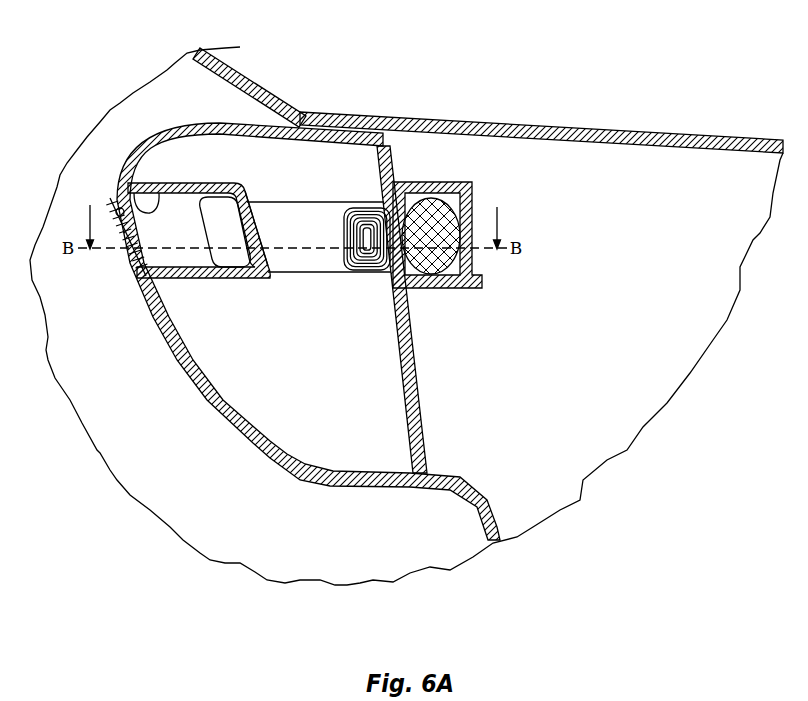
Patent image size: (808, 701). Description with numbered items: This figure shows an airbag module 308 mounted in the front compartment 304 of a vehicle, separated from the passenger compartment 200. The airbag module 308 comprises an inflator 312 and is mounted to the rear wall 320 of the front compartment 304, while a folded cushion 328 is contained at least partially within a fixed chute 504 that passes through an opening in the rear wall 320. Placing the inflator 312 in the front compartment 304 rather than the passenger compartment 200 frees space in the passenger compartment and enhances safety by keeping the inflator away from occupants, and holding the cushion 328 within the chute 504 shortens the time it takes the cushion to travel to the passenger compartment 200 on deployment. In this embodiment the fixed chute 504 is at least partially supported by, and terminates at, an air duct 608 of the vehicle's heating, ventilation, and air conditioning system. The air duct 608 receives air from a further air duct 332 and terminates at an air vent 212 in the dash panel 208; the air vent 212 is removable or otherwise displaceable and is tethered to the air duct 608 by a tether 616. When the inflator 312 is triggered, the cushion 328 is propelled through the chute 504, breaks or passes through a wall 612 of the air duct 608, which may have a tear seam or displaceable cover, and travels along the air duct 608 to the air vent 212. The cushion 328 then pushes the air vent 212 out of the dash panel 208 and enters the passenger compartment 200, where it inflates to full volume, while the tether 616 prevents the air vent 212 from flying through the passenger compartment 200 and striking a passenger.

The passenger compartment 200 is at (215, 526).
The dash panel 208 is at (212, 410).
The air vent 212 is at (125, 262).
The front compartment 304 is at (630, 167).
The airbag module 308 is at (450, 182).
The inflator 312 is at (448, 257).
The rear wall 320 is at (418, 387).
The folded cushion 328 is at (350, 210).
The air duct 332 is at (230, 260).
The fixed chute 504 is at (297, 273).
The air duct 608 is at (234, 188).
The wall 612 is at (258, 224).
The tether 616 is at (136, 218).